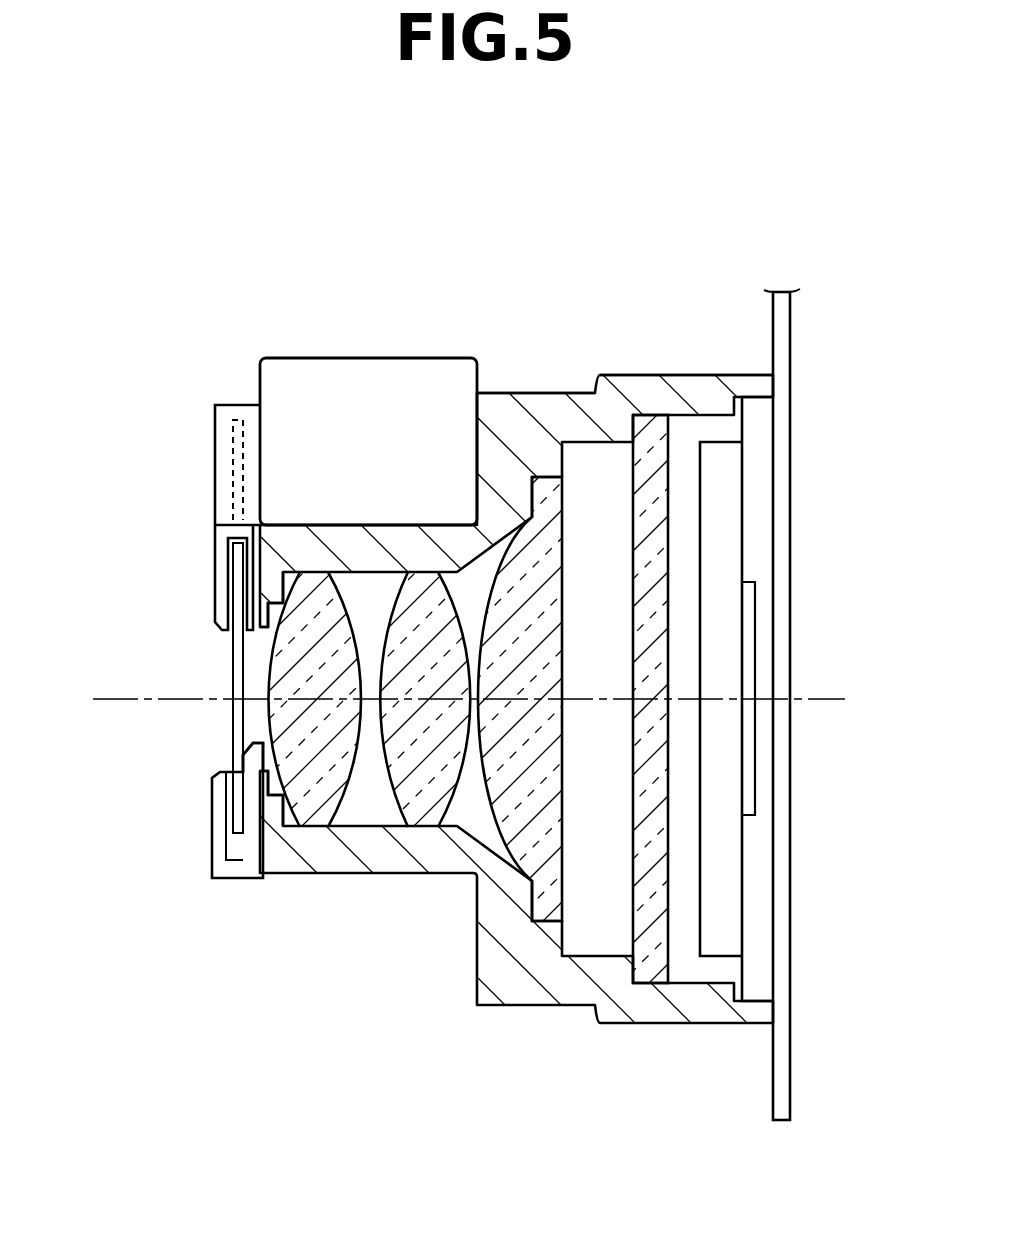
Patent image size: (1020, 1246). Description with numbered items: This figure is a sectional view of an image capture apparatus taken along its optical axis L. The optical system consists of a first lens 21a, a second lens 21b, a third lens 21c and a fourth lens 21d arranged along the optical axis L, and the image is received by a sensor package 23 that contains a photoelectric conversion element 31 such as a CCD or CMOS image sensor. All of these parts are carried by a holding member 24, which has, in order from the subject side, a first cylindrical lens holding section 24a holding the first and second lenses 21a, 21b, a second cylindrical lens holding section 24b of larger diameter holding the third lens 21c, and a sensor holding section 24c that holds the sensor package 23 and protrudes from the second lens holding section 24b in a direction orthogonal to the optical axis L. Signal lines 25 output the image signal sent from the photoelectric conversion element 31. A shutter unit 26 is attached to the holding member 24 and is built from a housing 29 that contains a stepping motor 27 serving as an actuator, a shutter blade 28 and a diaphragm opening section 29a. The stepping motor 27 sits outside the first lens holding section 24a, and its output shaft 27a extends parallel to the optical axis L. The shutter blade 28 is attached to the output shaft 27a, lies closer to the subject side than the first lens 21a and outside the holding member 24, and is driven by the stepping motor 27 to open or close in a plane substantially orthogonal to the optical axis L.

The first lens 21a is at (318, 810).
The second lens 21b is at (425, 800).
The third lens 21c is at (548, 905).
The fourth lens 21d is at (650, 970).
The sensor package 23 is at (760, 455).
The holding member 24 is at (572, 408).
The first cylindrical lens holding section 24a is at (368, 840).
The second cylindrical lens holding section 24b is at (497, 408).
The sensor holding section 24c is at (683, 388).
The signal lines 25 is at (791, 325).
The shutter unit 26 is at (258, 417).
The stepping motor 27 is at (325, 382).
The output shaft 27a is at (222, 455).
The shutter blade 28 is at (232, 675).
The housing 29 is at (228, 880).
The diaphragm opening section 29a is at (248, 755).
The photoelectric conversion element 31 is at (748, 625).
The optical axis L is at (127, 699).